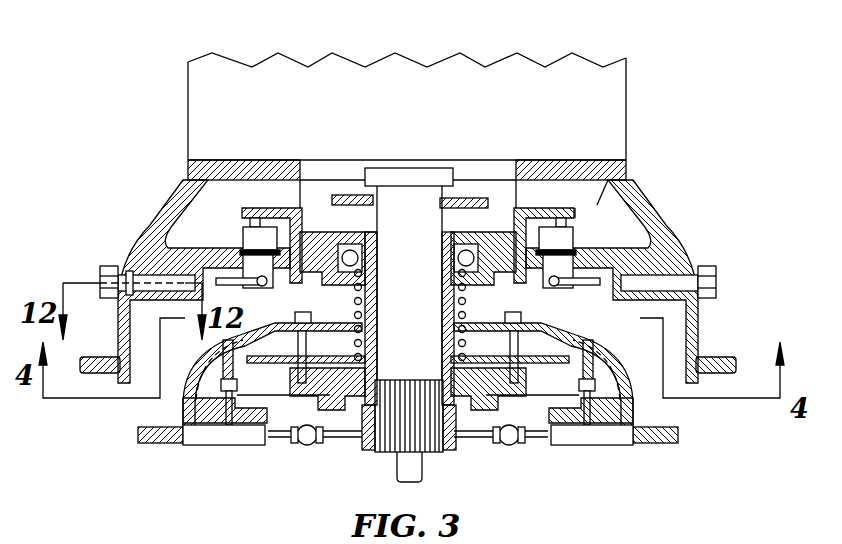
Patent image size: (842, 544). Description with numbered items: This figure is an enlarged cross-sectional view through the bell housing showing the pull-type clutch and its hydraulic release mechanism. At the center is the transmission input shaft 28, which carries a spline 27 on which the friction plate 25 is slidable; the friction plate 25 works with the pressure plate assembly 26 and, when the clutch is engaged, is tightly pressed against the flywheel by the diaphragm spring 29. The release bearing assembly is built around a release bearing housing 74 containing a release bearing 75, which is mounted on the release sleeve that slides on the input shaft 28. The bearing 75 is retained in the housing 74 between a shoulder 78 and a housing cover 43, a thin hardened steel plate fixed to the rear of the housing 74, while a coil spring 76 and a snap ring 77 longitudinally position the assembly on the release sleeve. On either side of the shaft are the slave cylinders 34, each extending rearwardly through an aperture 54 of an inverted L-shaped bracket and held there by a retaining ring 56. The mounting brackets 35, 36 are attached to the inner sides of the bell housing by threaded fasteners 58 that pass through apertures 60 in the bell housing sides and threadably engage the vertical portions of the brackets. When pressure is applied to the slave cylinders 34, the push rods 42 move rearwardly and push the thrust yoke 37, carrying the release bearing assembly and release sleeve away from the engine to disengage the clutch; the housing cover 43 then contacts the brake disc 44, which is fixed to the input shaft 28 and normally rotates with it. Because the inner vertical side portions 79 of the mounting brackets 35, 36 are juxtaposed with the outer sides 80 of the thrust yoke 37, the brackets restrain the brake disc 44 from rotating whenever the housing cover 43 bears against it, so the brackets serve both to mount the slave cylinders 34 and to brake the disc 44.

The friction plate 25 is at (568, 429).
The pressure plate assembly 26 is at (700, 262).
The spline 27 is at (489, 454).
The transmission input shaft 28 is at (368, 447).
The diaphragm spring 29 is at (274, 427).
The slave cylinder 34 is at (400, 129).
The slave cylinder mounting bracket 35 is at (631, 281).
The slave cylinder mounting bracket 36 is at (185, 281).
The thrust yoke 37 is at (563, 148).
The push rod 42 is at (409, 171).
The housing cover 43 is at (278, 157).
The brake disc 44 is at (493, 148).
The aperture 54 is at (399, 223).
The retaining ring 56 is at (425, 304).
The threaded fastener 58 is at (116, 267).
The aperture 60 is at (86, 246).
The release bearing housing 74 is at (318, 278).
The release bearing 75 is at (316, 152).
The coil spring 76 is at (486, 278).
The snap ring 77 is at (333, 130).
The shoulder 78 is at (408, 309).
The inner vertical side portion 79 is at (648, 122).
The outer side 80 is at (637, 143).